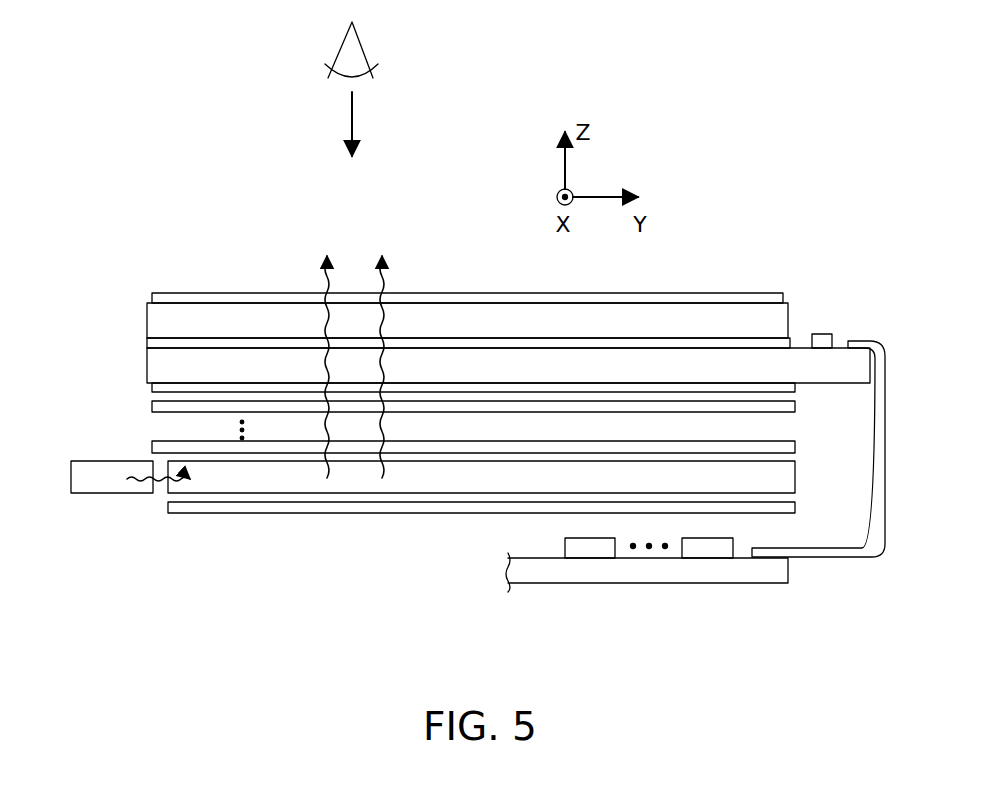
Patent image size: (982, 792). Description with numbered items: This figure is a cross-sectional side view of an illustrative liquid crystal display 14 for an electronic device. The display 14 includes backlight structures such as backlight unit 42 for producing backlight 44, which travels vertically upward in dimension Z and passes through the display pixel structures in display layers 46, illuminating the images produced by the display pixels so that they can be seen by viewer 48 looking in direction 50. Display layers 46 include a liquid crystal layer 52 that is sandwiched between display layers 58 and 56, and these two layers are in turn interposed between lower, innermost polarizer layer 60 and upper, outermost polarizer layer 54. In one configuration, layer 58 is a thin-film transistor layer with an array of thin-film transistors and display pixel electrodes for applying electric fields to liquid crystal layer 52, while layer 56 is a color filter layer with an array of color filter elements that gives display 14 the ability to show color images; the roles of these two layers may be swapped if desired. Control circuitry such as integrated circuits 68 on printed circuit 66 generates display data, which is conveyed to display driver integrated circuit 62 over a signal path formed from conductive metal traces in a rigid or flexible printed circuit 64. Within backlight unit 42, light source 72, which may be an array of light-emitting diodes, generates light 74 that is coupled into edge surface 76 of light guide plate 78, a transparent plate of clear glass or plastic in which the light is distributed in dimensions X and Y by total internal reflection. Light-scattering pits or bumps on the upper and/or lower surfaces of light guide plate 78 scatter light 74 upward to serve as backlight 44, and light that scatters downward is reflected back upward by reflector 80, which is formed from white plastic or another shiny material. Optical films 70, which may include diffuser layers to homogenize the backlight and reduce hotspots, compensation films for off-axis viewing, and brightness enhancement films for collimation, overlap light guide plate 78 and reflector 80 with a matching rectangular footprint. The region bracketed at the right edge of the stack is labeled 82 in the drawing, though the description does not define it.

The display 14 is at (817, 128).
The backlight unit 42 is at (454, 481).
The backlight 44 is at (378, 275).
The display layers 46 is at (461, 333).
The viewer 48 is at (365, 48).
The direction 50 is at (352, 127).
The liquid crystal layer 52 is at (207, 342).
The upper polarizer layer 54 is at (168, 298).
The color filter layer 56 is at (147, 312).
The thin-film transistor layer 58 is at (147, 367).
The lower polarizer layer 60 is at (434, 404).
The display driver integrated circuit 62 is at (832, 338).
The printed circuit 64 is at (885, 390).
The printed circuit 66 is at (610, 580).
The integrated circuits 68 is at (687, 542).
The optical films 70 is at (163, 409).
The light source 72 is at (82, 486).
The light 74 is at (140, 477).
The edge surface 76 is at (170, 480).
The light guide plate 78 is at (237, 486).
The reflector 80 is at (303, 508).
The inactive border region 82 is at (882, 315).